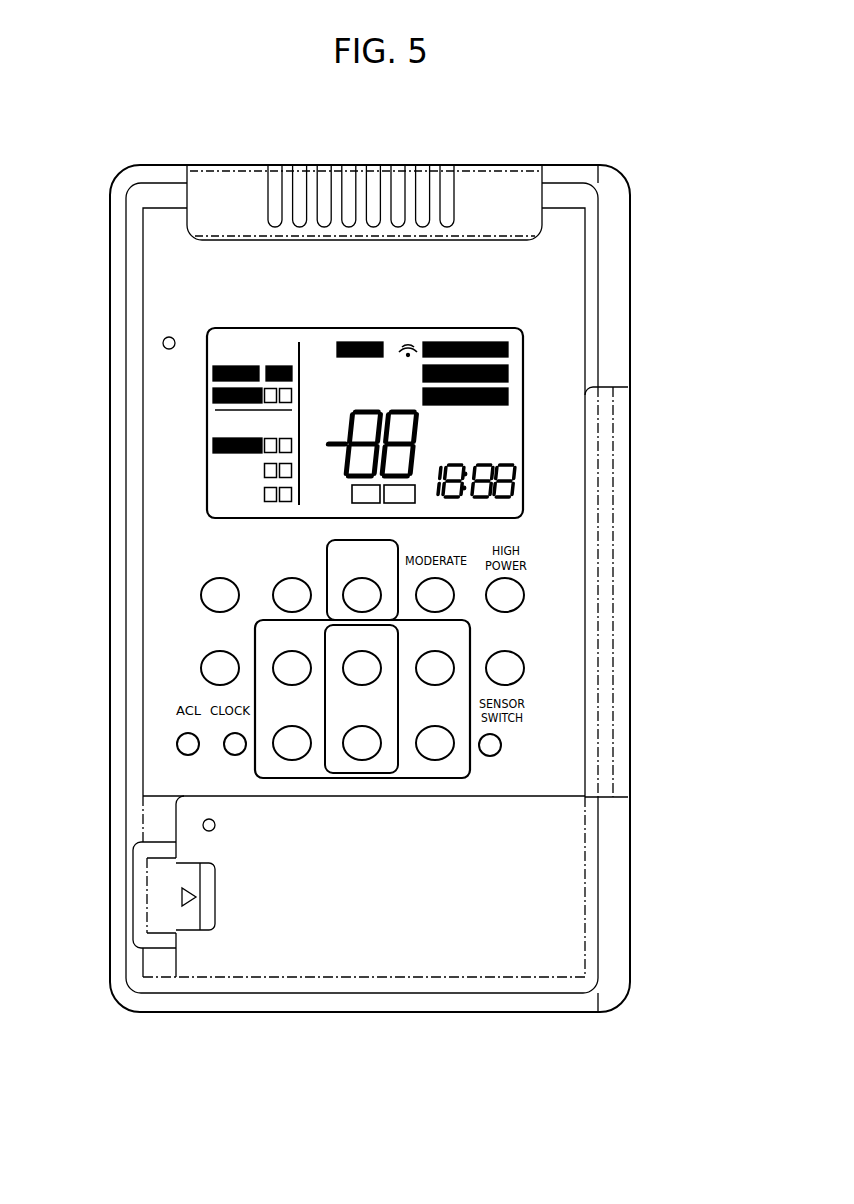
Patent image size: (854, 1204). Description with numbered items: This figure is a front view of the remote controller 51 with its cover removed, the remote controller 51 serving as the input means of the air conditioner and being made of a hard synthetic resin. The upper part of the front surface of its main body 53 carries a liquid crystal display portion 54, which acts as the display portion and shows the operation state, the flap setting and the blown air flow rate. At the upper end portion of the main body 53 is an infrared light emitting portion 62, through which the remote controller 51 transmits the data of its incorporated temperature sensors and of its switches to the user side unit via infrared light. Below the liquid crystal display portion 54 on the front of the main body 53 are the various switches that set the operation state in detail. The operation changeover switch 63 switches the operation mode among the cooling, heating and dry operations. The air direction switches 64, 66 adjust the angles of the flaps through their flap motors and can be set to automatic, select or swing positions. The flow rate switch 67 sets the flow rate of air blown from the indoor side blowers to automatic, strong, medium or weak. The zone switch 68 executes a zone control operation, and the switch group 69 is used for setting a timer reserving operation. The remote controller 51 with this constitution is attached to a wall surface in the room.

The remote controller 51 is at (649, 337).
The main body 53 is at (108, 522).
The liquid crystal display portion 54 is at (508, 328).
The infrared light emitting portion 62 is at (362, 165).
The operation changeover switch 63 is at (380, 604).
The air direction switch 64 is at (201, 595).
The air direction switch 66 is at (201, 668).
The flow rate switch 67 is at (282, 583).
The zone switch 68 is at (524, 667).
The switch group 69 is at (297, 780).